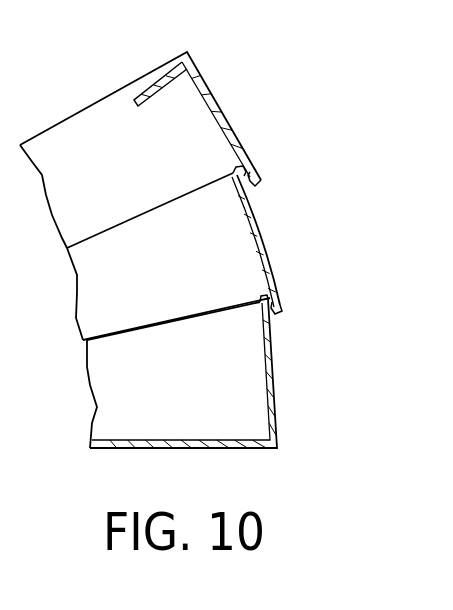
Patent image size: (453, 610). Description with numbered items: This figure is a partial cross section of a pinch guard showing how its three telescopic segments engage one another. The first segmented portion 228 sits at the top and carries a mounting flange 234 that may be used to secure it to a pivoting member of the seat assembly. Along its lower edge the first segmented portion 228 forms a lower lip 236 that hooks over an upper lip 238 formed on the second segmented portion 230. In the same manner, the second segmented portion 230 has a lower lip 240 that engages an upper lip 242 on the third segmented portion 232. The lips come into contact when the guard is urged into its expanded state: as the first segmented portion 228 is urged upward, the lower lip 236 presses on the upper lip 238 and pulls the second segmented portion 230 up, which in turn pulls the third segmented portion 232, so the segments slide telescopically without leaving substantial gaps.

The first segmented portion 228 is at (232, 92).
The second segmented portion 230 is at (272, 243).
The third segmented portion 232 is at (282, 385).
The mounting flange 234 is at (143, 93).
The lower lip 236 is at (251, 184).
The upper lip 238 is at (245, 165).
The lower lip 240 is at (273, 311).
The upper lip 242 is at (266, 298).